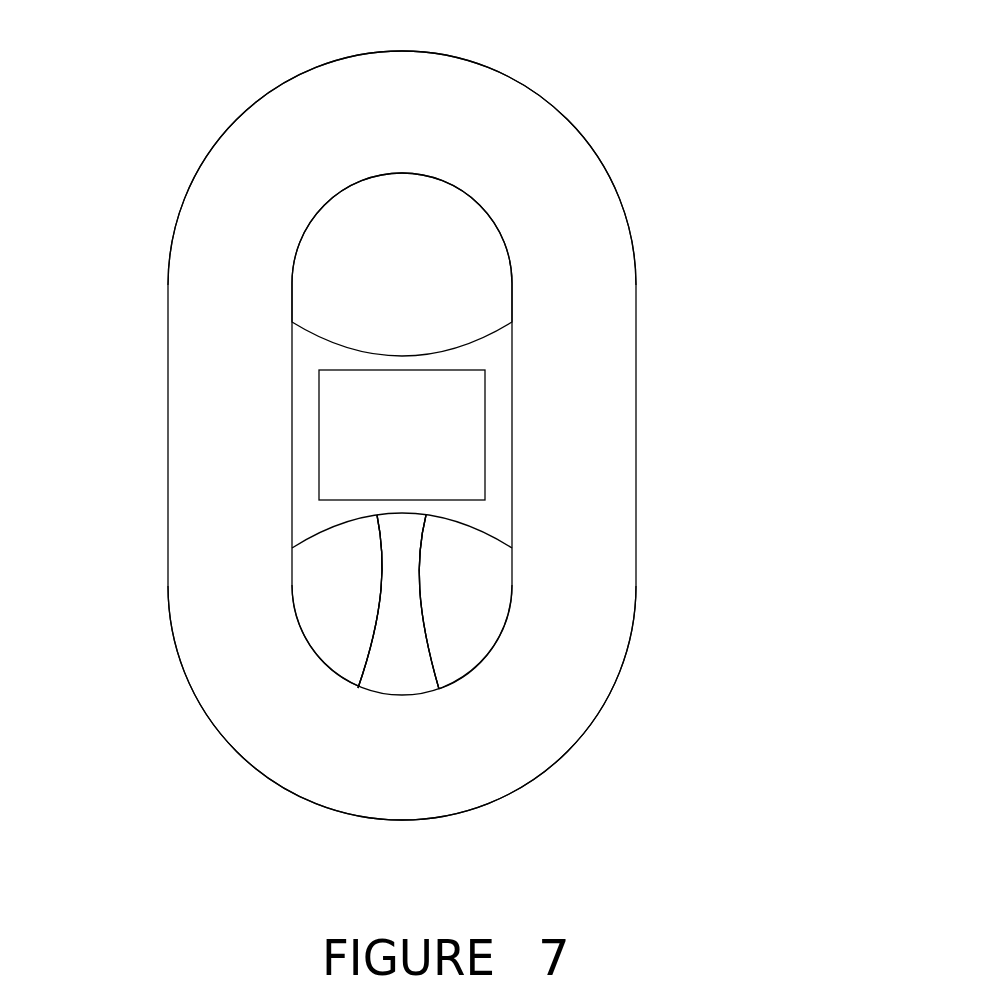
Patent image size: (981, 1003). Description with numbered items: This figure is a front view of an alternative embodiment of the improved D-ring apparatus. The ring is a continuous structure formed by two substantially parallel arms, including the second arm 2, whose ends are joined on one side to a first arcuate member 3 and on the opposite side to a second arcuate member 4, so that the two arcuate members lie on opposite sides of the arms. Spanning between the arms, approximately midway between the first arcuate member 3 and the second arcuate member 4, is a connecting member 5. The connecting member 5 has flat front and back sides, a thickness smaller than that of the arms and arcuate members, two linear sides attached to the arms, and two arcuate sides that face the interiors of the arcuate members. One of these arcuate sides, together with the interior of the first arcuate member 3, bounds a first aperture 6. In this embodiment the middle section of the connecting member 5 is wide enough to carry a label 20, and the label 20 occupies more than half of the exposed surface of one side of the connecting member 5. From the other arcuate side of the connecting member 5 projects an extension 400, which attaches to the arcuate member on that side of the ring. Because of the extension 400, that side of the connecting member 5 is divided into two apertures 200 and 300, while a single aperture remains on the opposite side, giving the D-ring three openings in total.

The second arm 2 is at (636, 425).
The first arcuate member 3 is at (490, 67).
The second arcuate member 4 is at (487, 803).
The connecting member 5 is at (310, 518).
The first aperture 6 is at (490, 262).
The label 20 is at (342, 423).
The aperture 200 is at (490, 607).
The aperture 300 is at (345, 663).
The extension 400 is at (382, 590).